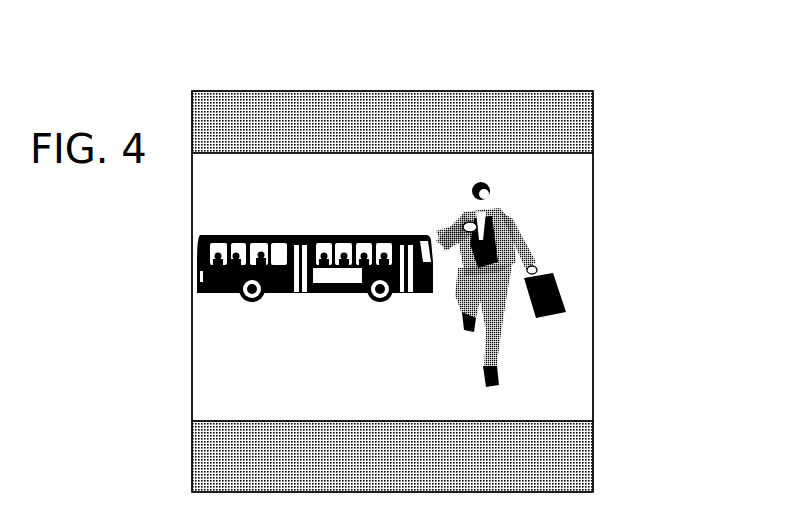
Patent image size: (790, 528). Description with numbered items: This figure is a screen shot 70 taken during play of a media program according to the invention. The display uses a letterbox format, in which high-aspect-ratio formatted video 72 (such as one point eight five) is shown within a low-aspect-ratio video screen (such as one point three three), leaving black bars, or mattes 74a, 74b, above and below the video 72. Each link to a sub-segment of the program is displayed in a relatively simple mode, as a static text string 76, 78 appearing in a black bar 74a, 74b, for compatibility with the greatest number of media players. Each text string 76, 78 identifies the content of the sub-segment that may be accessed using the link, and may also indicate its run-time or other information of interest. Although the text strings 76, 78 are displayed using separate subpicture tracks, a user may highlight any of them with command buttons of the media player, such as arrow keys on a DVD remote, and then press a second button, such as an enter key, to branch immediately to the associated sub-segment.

The screen shot 70 is at (482, 91).
The formatted video 72 is at (574, 188).
The black bar (matte) 74a is at (572, 131).
The black bar (matte) 74b is at (578, 452).
The static text string 76 is at (203, 427).
The static text string 78 is at (203, 457).